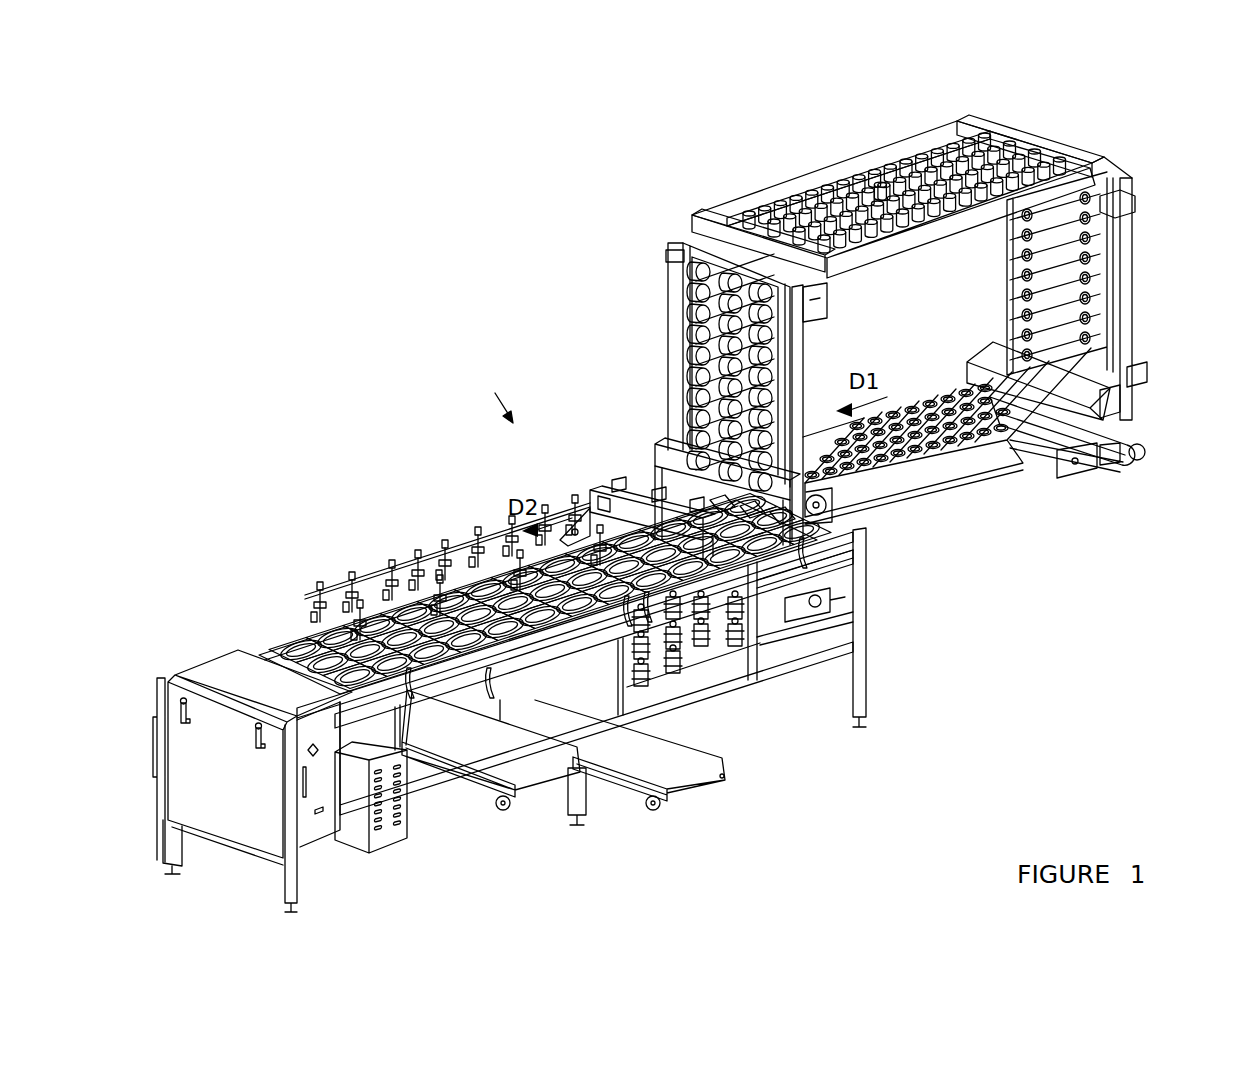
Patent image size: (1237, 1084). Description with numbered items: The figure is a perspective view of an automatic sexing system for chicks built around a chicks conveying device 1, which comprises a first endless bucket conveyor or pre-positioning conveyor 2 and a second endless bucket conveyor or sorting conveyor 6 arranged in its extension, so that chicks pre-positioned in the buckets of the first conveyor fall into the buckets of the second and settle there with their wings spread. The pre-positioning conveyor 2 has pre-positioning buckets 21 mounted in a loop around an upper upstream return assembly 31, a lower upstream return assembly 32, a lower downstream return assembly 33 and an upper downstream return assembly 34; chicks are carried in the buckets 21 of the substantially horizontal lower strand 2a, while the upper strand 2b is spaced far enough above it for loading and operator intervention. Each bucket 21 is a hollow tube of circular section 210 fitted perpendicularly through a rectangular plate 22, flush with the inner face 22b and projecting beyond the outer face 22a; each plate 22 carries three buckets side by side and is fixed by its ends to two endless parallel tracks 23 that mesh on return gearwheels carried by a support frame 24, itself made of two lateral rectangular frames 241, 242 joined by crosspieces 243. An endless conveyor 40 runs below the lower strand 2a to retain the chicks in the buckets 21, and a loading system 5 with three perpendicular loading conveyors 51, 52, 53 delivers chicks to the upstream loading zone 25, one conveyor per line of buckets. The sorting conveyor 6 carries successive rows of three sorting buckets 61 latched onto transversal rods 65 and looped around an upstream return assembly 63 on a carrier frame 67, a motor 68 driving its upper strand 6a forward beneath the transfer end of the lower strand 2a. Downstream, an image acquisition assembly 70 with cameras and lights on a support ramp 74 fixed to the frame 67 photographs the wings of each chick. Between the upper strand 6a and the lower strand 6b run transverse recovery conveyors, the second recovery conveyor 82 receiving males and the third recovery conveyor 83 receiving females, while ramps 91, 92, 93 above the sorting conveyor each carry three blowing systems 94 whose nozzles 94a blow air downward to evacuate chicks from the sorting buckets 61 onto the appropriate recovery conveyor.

The chicks conveying device 1 is at (496, 399).
The pre-positioning conveyor 2 is at (1134, 191).
The lower strand 2a is at (923, 428).
The upper strand 2b is at (887, 198).
The loading system 5 is at (1150, 445).
The sorting conveyor 6 is at (223, 658).
The upper strand 6a is at (281, 658).
The lower strand 6b is at (713, 690).
The pre-positioning buckets 21 is at (852, 212).
The rectangular plate 22 is at (692, 328).
The outer face 22a is at (1068, 335).
The inner face 22b is at (700, 375).
The endless parallel tracks 23 is at (805, 218).
The support frame 24 is at (1133, 354).
The upstream loading zone 25 is at (960, 370).
The upper upstream return assembly 31 is at (1113, 210).
The lower upstream return assembly 32 is at (1122, 404).
The lower downstream return assembly 33 is at (830, 500).
The upper downstream return assembly 34 is at (668, 257).
The endless conveyor 40 is at (985, 484).
The loading conveyor 51 is at (1103, 468).
The loading conveyor 52 is at (1122, 460).
The loading conveyor 53 is at (1144, 456).
The sorting buckets 61 is at (292, 640).
The upstream return assembly 63 is at (832, 599).
The transversal rods 65 is at (742, 672).
The carrier frame 67 is at (870, 682).
The motor 68 is at (396, 835).
The image acquisition assembly 70 is at (590, 494).
The support ramp 74 is at (578, 514).
The second recovery conveyor 82 is at (700, 790).
The third recovery conveyor 83 is at (512, 792).
The ramp 91 is at (478, 555).
The ramp 92 is at (417, 578).
The ramp 93 is at (350, 606).
The blowing system 94 is at (390, 592).
The nozzle 94a is at (318, 618).
The hollow tube of circular section 210 is at (926, 165).
The lateral rectangular frame 241 is at (1133, 272).
The lateral rectangular frame 242 is at (752, 215).
The crosspieces 243 is at (1045, 142).